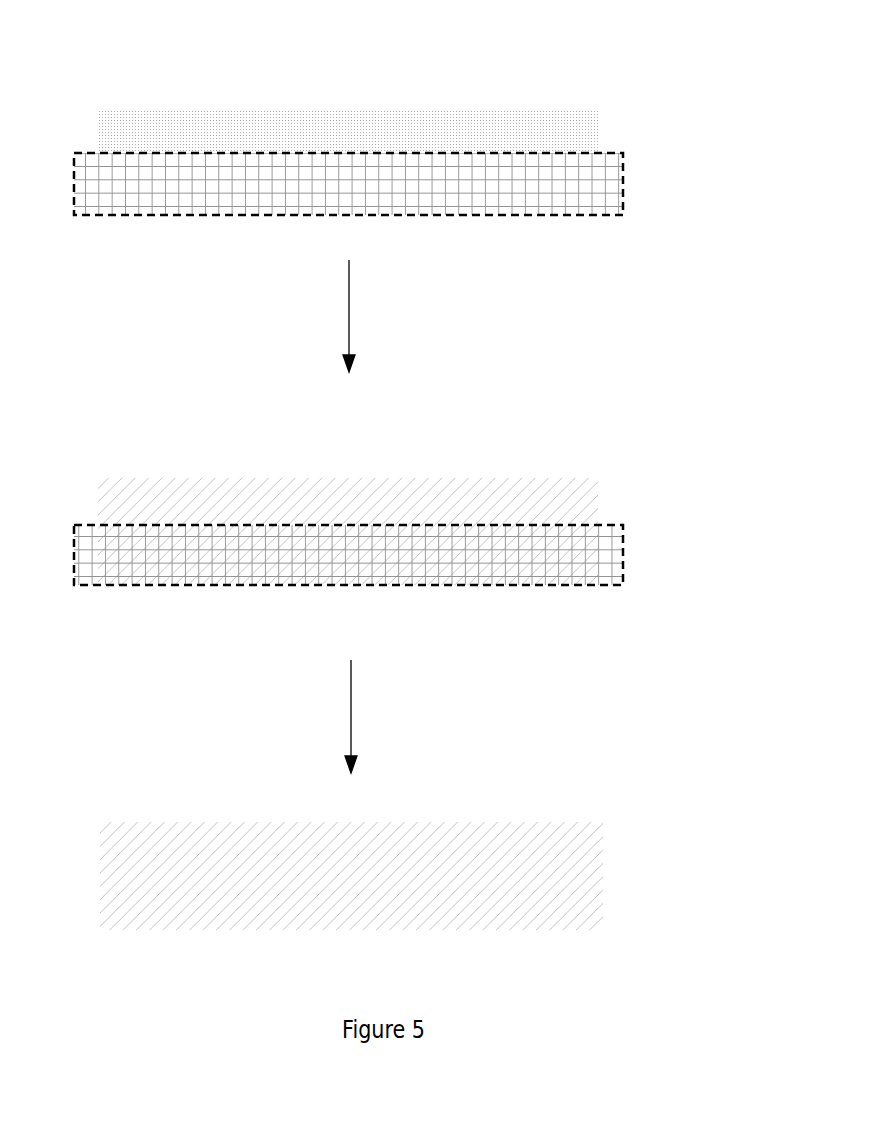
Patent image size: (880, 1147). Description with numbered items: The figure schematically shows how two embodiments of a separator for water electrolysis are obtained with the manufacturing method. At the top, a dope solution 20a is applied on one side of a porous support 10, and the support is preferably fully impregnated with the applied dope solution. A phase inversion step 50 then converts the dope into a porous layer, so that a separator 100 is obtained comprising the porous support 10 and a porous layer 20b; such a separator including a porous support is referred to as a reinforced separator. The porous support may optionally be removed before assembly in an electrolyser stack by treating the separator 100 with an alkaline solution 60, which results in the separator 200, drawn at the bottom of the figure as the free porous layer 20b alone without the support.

The porous support 10 is at (623, 183).
The dope solution 20a is at (133, 118).
The porous layer 20b is at (135, 493).
The phase inversion step 50 is at (323, 316).
The alkaline solution 60 is at (322, 716).
The separator 100 is at (331, 503).
The separator 200 is at (65, 791).